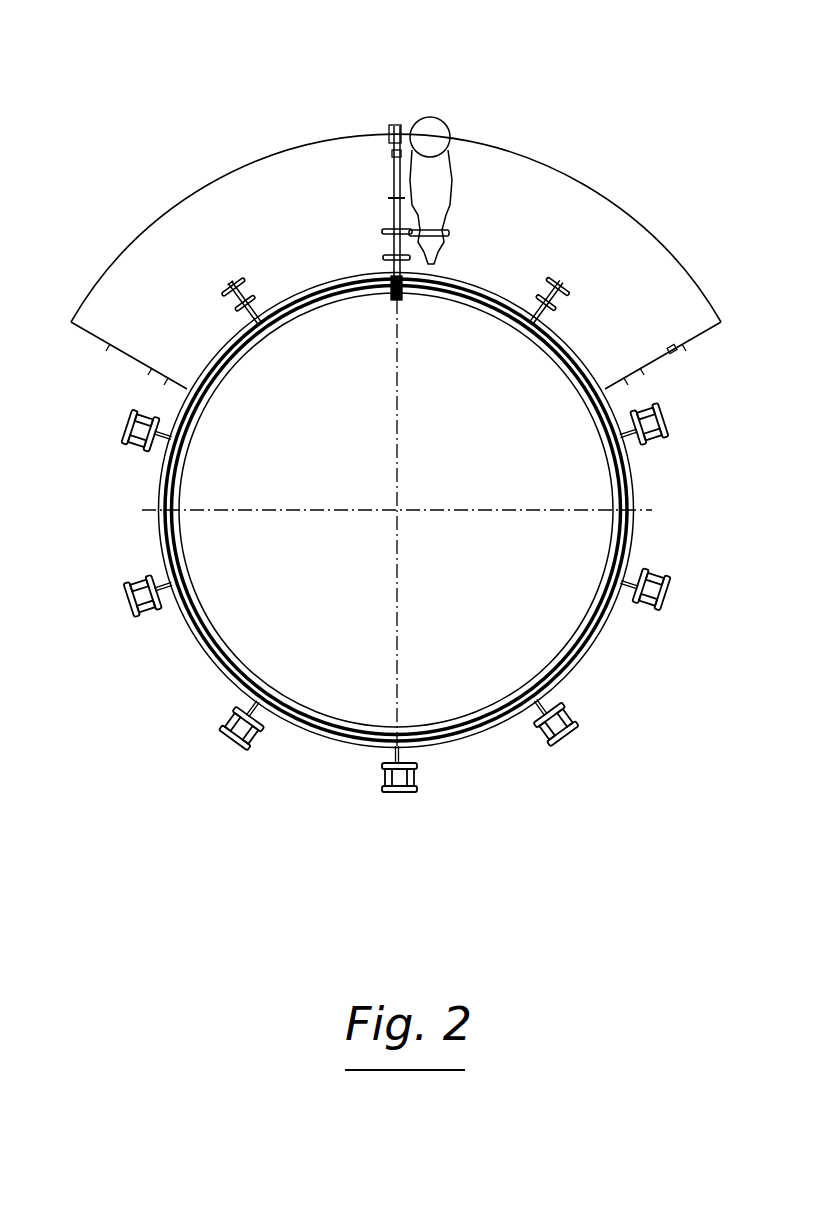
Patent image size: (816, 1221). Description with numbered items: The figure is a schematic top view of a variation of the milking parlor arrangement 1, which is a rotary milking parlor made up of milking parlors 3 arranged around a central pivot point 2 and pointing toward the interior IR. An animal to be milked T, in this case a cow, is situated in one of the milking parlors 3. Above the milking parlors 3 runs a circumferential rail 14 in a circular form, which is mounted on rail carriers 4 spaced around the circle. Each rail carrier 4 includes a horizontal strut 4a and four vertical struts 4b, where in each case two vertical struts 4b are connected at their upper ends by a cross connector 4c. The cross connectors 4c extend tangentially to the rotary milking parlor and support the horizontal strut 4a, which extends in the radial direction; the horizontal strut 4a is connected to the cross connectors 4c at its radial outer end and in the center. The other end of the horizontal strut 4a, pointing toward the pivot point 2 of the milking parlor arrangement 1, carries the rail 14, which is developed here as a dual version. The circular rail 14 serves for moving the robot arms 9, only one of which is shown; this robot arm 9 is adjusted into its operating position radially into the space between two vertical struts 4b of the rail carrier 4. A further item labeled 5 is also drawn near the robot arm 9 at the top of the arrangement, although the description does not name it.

The milking parlor arrangement 1 is at (229, 101).
The pivot point 2 is at (397, 512).
The milking parlor 3 is at (302, 168).
The rail carrier 4 is at (395, 495).
The horizontal strut 4a is at (237, 295).
The vertical strut 4b is at (238, 277).
The cross connector 4c is at (225, 293).
The tensioning device 5 is at (378, 176).
The robot arm 9 is at (366, 230).
The rail 14 is at (475, 302).
The animal to be milked T is at (445, 118).
The interior IR is at (488, 465).